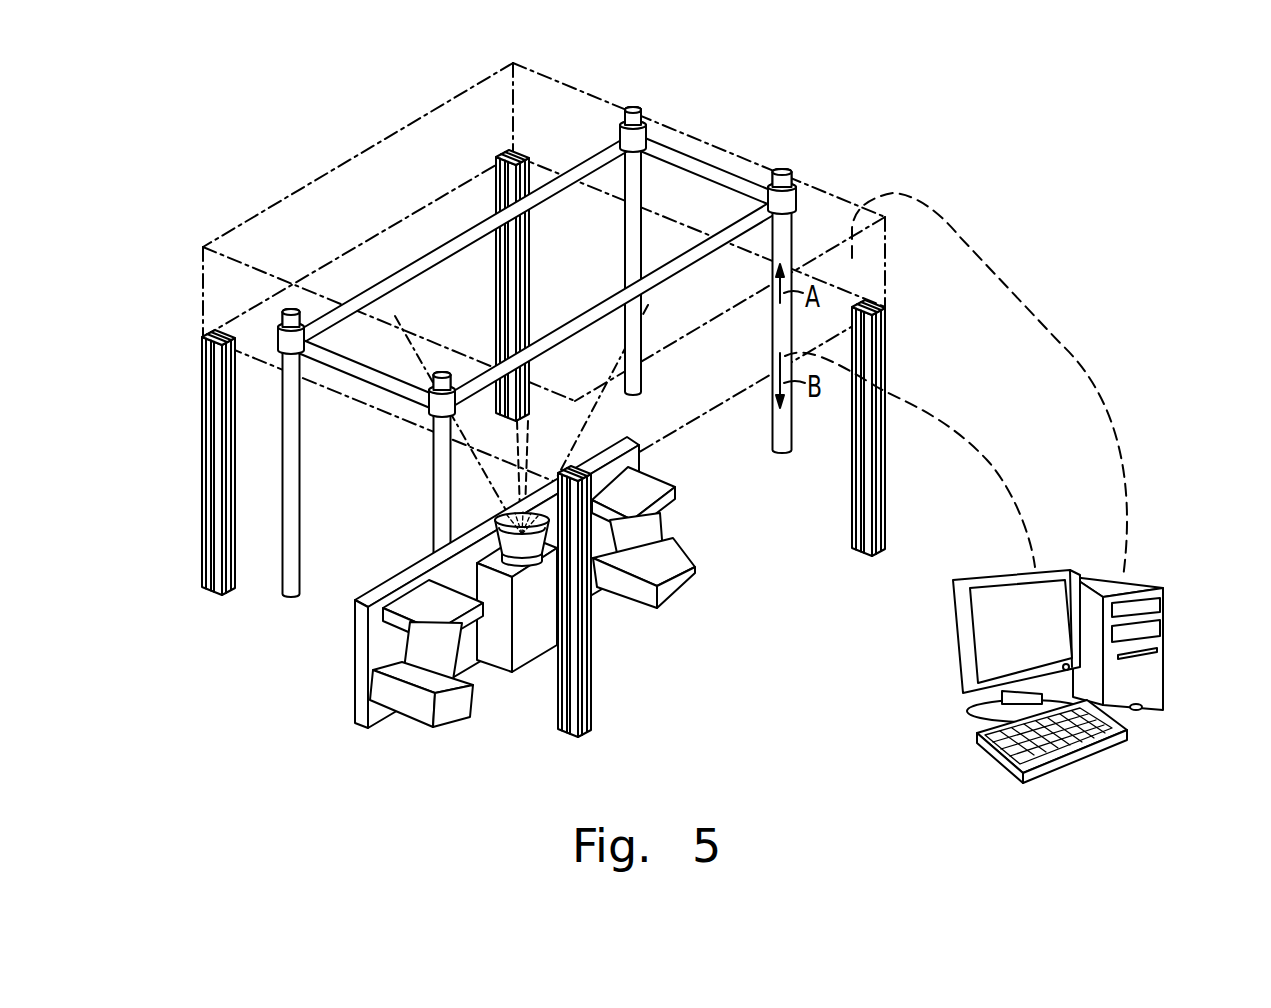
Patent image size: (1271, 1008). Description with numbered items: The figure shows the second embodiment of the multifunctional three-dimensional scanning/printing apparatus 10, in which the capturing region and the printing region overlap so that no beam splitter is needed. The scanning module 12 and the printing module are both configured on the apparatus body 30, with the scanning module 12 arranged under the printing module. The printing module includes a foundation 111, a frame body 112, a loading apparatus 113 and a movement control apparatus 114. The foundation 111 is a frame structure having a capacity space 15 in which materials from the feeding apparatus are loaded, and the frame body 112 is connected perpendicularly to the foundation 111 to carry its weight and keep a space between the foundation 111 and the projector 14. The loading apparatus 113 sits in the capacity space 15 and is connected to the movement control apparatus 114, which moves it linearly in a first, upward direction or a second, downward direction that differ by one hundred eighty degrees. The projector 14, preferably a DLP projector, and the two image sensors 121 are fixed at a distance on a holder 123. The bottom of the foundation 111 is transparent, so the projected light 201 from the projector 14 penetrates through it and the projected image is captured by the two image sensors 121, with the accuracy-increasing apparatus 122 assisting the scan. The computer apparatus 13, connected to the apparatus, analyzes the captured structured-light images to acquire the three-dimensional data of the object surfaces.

The multifunctional 3D scanning/printing apparatus 10 is at (122, 93).
The foundation 111 is at (203, 273).
The frame body 112 is at (217, 497).
The loading apparatus 113 is at (505, 238).
The movement control apparatus 114 is at (781, 238).
The scanning module 12 is at (400, 578).
The image sensor 121 is at (661, 517).
The accuracy-increasing apparatus 122 is at (645, 484).
The holder 123 is at (358, 657).
The computer apparatus 13 is at (1163, 620).
The projector 14 is at (526, 643).
The capacity space 15 is at (320, 200).
The projected light 201 is at (577, 492).
The apparatus body 30 is at (378, 116).